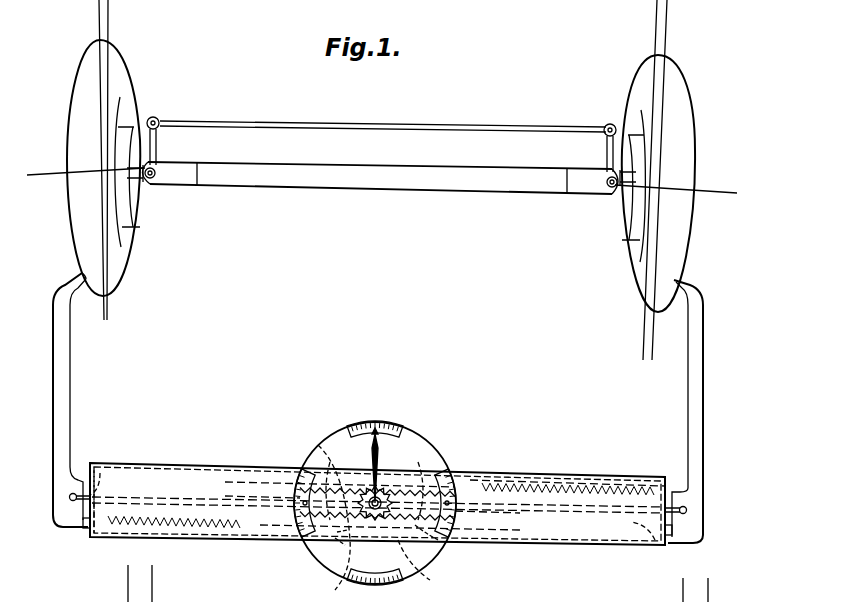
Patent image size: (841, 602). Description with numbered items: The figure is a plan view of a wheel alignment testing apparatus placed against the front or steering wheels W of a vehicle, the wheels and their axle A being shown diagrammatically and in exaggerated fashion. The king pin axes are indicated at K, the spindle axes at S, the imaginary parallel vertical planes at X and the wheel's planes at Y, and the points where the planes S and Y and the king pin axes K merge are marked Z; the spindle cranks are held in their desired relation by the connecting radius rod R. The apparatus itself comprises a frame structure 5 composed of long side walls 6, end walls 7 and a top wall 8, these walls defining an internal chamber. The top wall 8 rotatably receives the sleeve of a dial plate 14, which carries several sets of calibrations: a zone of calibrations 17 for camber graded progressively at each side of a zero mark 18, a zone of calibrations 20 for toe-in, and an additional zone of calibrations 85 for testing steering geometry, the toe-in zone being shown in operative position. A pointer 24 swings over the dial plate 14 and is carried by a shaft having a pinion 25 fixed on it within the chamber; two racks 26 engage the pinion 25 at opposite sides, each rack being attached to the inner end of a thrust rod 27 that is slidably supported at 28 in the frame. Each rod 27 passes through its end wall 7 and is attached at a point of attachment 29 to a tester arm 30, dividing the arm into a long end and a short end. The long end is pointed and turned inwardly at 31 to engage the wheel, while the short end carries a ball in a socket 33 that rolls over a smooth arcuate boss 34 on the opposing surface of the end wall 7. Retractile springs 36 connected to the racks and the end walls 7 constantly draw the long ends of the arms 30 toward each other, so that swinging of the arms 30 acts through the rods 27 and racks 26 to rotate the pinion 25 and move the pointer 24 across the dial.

The wheels W is at (68, 130).
The imaginary parallel vertical planes X is at (112, 20).
The wheel's planes Y is at (126, 592).
The spindle axes S is at (50, 178).
The merge points Z is at (99, 185).
The radius rod R is at (518, 126).
The axle A is at (323, 190).
The king pin axes K is at (158, 185).
The tester arm 30 is at (53, 452).
The inturned pointed end 31 is at (78, 276).
The socket 33 is at (65, 531).
The arcuate boss 34 is at (84, 526).
The point of attachment 29 is at (69, 498).
The frame structure 5 is at (190, 464).
The side walls 6 is at (108, 476).
The end walls 7 is at (100, 490).
The zone of calibrations 17 is at (292, 499).
The thrust rod 27 is at (213, 494).
The retractile springs 36 is at (236, 530).
The top wall 8 is at (498, 490).
The dial plate 14 is at (438, 463).
The zone of calibrations 20 is at (354, 424).
The pointer 24 is at (385, 432).
The zero mark 18 is at (356, 498).
The racks 26 is at (332, 460).
The slidable support 28 is at (394, 488).
The pinion 25 is at (318, 544).
The zone of calibrations 85 is at (443, 542).